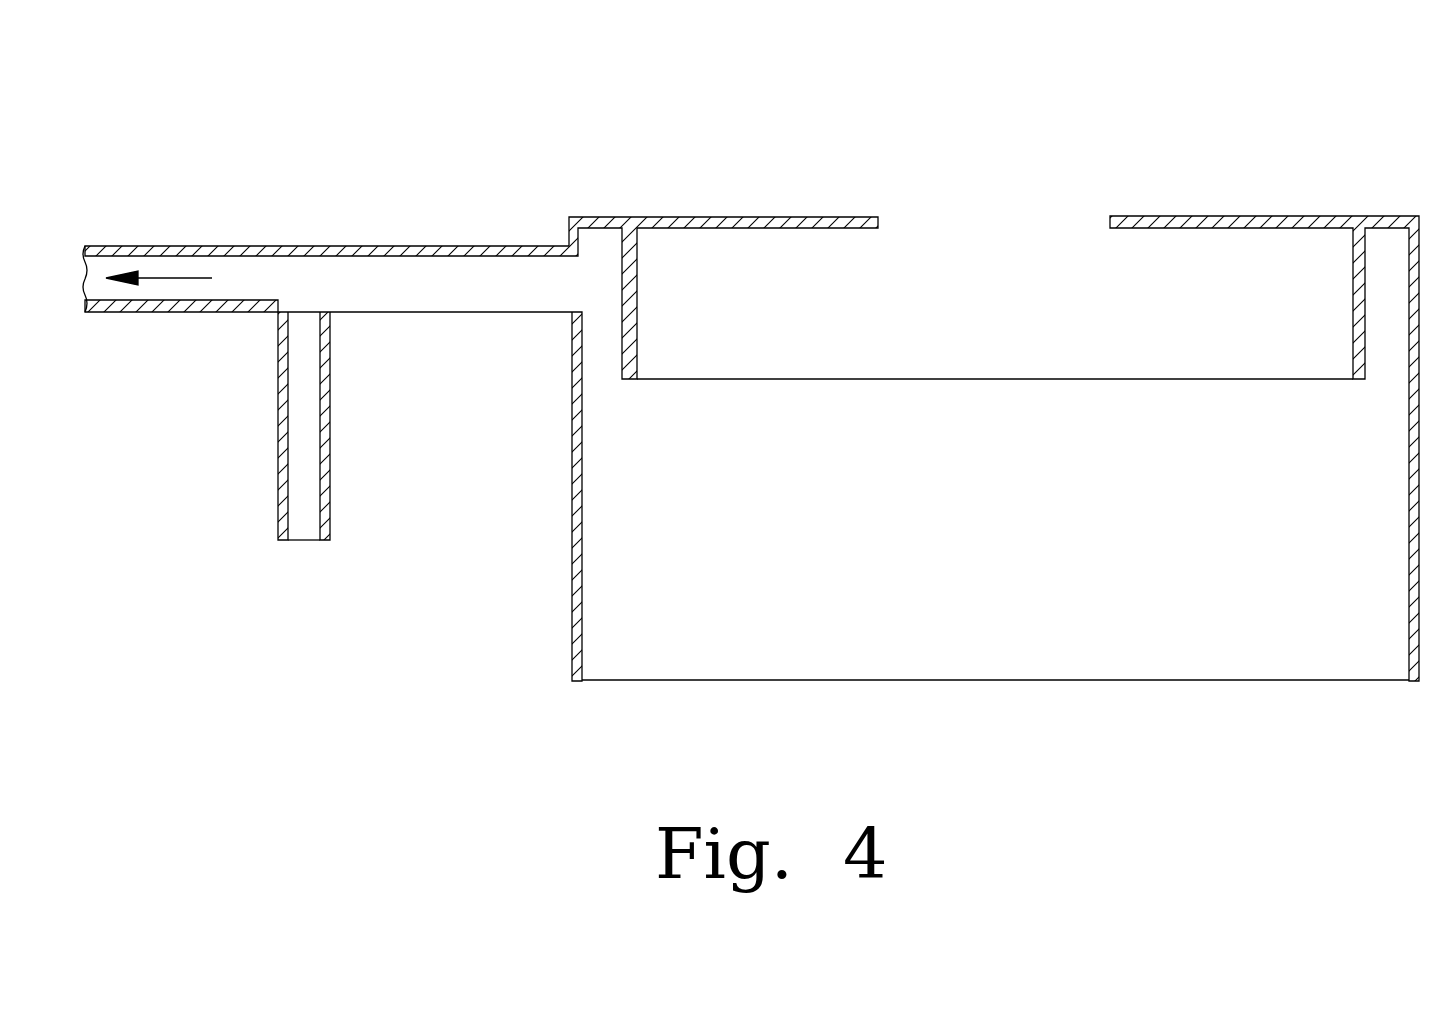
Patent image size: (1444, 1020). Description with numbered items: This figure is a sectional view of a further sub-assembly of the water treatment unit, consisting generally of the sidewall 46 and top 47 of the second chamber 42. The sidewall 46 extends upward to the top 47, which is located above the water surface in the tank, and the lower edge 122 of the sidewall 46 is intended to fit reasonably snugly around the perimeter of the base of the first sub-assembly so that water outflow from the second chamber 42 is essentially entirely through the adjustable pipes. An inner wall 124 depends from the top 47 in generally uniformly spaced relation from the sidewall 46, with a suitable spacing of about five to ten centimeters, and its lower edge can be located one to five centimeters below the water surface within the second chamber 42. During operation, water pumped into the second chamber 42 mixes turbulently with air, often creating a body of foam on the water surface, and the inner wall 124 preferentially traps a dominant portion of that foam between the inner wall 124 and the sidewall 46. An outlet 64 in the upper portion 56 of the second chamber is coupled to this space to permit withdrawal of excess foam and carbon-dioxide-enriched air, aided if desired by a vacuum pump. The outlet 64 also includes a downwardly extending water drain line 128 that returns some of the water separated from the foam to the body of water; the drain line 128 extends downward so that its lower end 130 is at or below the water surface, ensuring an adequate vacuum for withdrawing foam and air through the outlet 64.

The second chamber 42 is at (1313, 139).
The sidewall 46 is at (572, 488).
The top 47 is at (805, 216).
The upper portion 56 is at (1102, 538).
The outlet 64 is at (484, 272).
The lower edge 122 is at (640, 683).
The inner wall 124 is at (757, 367).
The water drain line 128 is at (297, 415).
The lower end 130 is at (298, 545).